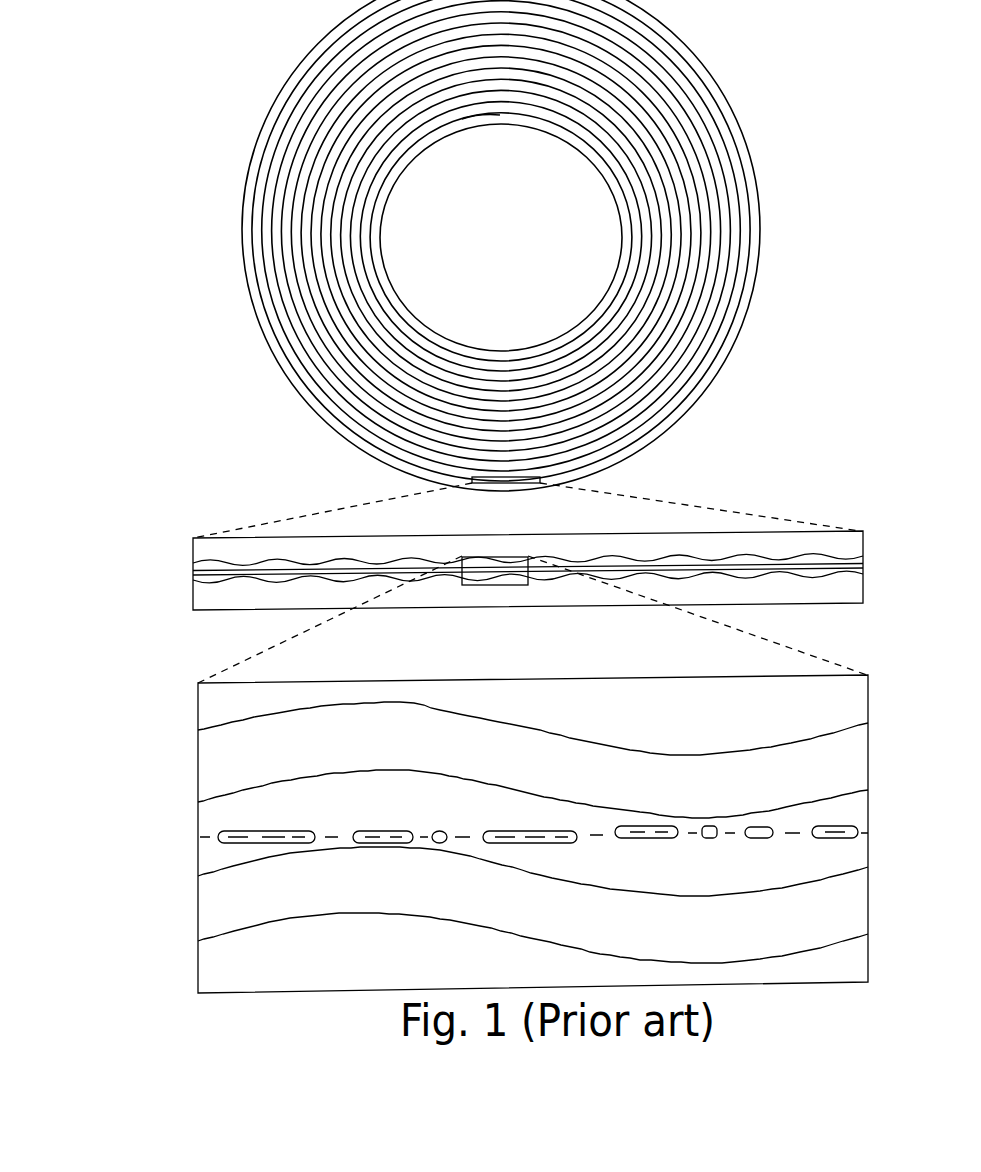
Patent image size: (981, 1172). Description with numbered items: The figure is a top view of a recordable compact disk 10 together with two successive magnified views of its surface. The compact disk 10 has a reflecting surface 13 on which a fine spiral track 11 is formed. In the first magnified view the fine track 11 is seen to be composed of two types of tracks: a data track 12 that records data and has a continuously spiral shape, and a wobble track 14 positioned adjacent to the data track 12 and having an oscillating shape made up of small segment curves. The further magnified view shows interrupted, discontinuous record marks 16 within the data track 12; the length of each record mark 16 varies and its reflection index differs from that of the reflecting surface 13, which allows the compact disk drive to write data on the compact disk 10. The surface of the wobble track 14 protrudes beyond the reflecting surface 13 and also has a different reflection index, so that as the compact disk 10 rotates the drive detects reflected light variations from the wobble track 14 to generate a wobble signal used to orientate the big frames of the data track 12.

The recordable compact disk 10 is at (278, 70).
The fine spiral track 11 is at (380, 459).
The data track 12 is at (187, 567).
The reflecting surface 13 is at (662, 436).
The wobble track 14 is at (253, 561).
The record mark 16 is at (448, 818).